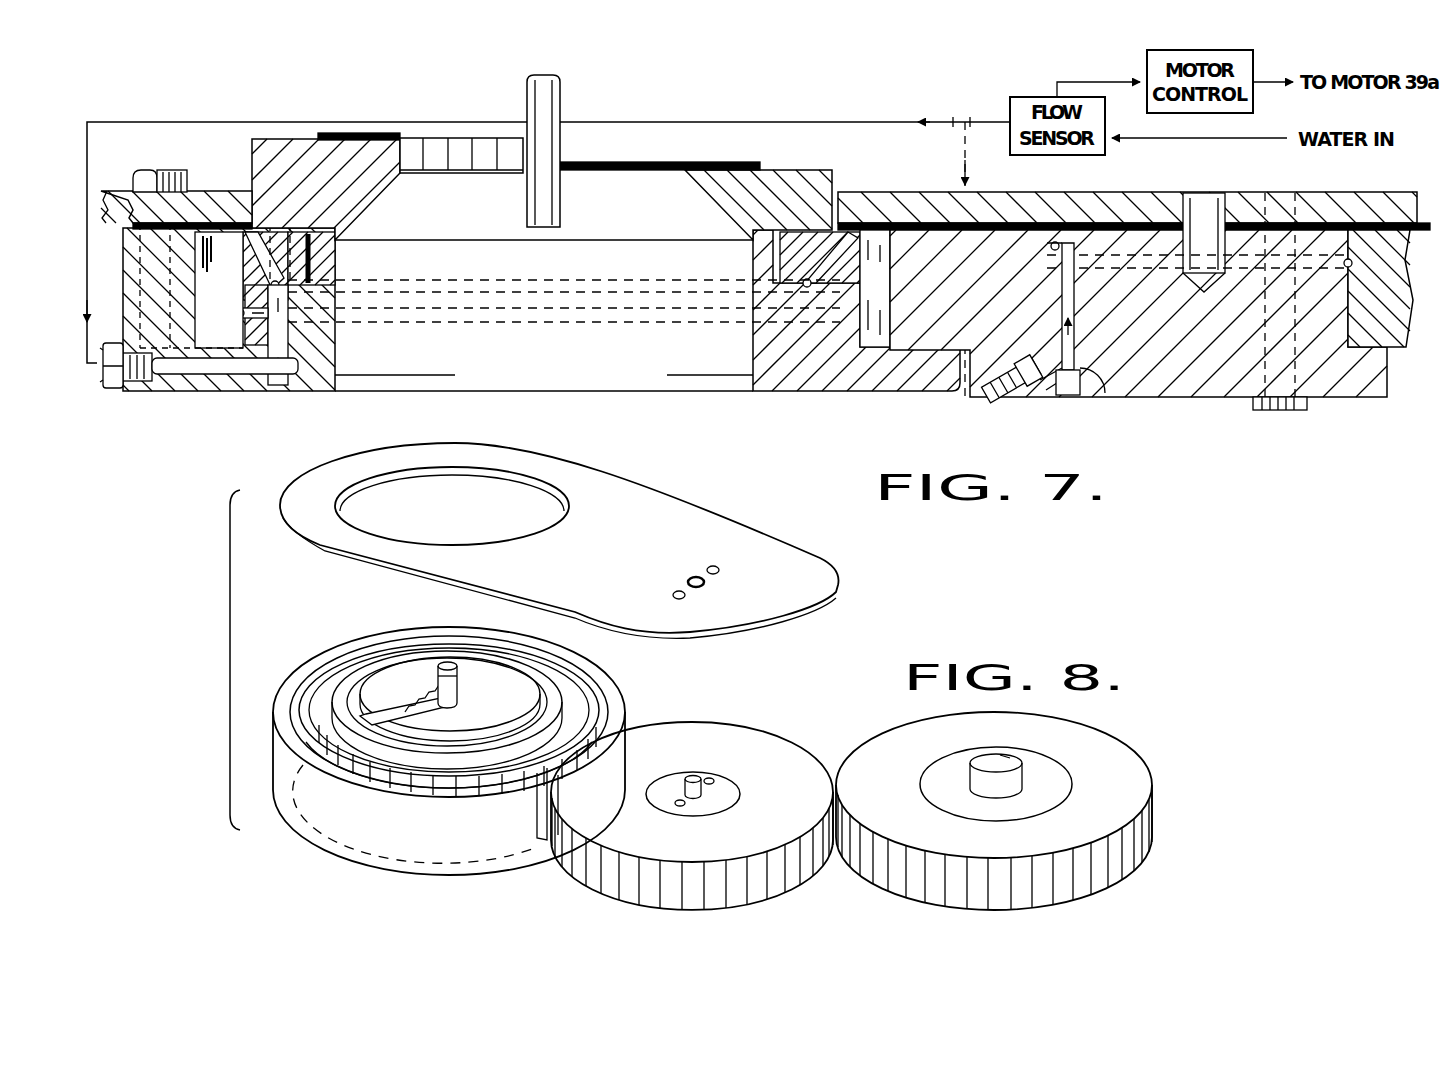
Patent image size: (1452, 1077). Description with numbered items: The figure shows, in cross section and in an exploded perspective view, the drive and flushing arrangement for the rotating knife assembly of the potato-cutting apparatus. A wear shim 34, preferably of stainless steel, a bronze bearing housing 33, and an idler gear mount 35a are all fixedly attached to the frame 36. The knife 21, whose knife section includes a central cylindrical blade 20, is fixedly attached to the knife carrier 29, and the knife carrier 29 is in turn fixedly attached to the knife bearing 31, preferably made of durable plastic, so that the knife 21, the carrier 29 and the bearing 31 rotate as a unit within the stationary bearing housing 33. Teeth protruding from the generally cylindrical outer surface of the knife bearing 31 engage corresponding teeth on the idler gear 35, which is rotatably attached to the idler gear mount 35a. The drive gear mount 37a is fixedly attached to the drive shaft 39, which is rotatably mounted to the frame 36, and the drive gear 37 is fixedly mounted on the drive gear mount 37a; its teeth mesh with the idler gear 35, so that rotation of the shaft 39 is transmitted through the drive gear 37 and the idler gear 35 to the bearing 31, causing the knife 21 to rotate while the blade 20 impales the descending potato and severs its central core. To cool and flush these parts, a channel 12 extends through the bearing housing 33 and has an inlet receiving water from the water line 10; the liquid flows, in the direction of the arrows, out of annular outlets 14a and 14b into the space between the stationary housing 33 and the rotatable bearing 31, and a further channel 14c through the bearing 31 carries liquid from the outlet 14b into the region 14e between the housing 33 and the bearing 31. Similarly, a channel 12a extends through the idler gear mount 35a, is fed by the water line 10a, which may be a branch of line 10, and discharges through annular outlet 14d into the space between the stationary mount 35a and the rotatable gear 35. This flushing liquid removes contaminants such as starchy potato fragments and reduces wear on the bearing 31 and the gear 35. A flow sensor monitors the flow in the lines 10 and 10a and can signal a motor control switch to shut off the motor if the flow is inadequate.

In FIG. 7, the water line 10 is at (106, 390).
In FIG. 7, the water line 10a is at (996, 400).
In FIG. 7, the channel 12 is at (174, 376).
In FIG. 7, the channel 12a is at (1092, 386).
In FIG. 7, the annular outlet 14a is at (492, 325).
In FIG. 7, the annular outlet 14b is at (497, 280).
In FIG. 7, the channel 14c is at (240, 232).
In FIG. 7, the annular outlet 14d is at (1052, 242).
In FIG. 7, the region 14e is at (205, 228).
In FIG. 7, the central cylindrical blade 20 is at (562, 96).
In FIG. 8, the central cylindrical blade 20 is at (450, 660).
In FIG. 7, the knife 21 is at (452, 136).
In FIG. 8, the knife 21 is at (420, 650).
In FIG. 7, the knife carrier 29 is at (289, 139).
In FIG. 8, the knife carrier 29 is at (373, 640).
In FIG. 7, the knife bearing 31 is at (337, 247).
In FIG. 8, the knife bearing 31 is at (330, 666).
In FIG. 7, the bearing housing 33 is at (124, 282).
In FIG. 8, the bearing housing 33 is at (294, 686).
In FIG. 7, the wear shim 34 is at (183, 192).
In FIG. 8, the wear shim 34 is at (650, 503).
In FIG. 7, the idler gear 35 is at (866, 196).
In FIG. 8, the idler gear 35 is at (597, 887).
In FIG. 7, the idler gear mount 35a is at (1178, 396).
In FIG. 8, the idler gear mount 35a is at (683, 770).
In FIG. 7, the frame 36 is at (130, 190).
In FIG. 8, the drive gear 37 is at (890, 722).
In FIG. 8, the drive gear mount 37a is at (922, 784).
In FIG. 8, the drive shaft 39 is at (1023, 772).